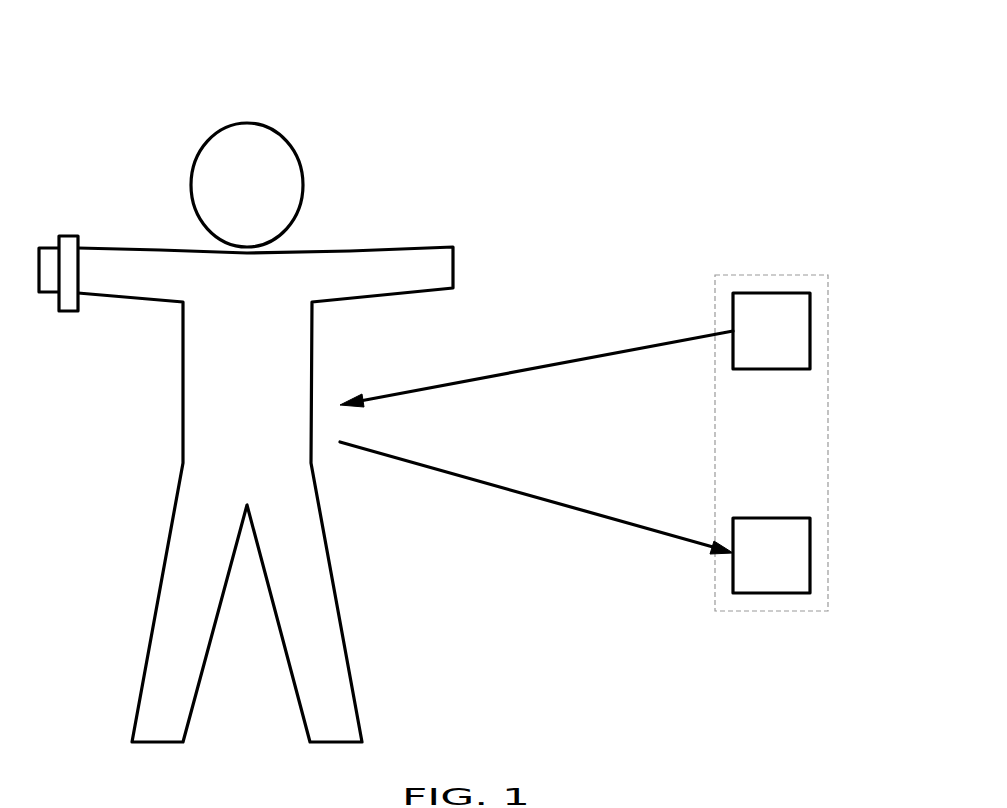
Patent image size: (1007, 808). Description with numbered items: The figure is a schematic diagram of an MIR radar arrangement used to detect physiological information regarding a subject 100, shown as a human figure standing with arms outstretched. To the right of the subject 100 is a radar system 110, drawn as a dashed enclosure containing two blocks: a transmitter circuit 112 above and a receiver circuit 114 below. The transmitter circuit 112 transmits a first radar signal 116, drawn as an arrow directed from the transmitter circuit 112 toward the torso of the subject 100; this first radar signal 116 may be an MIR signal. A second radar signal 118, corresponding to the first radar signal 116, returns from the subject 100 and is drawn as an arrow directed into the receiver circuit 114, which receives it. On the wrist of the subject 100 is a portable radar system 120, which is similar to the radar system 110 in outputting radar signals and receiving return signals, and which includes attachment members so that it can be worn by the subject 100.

The subject 100 is at (285, 104).
The radar system 110 is at (813, 254).
The transmitter circuit 112 is at (810, 330).
The receiver circuit 114 is at (810, 553).
The first radar signal 116 is at (568, 360).
The second radar signal 118 is at (582, 508).
The portable radar system 120 is at (63, 312).